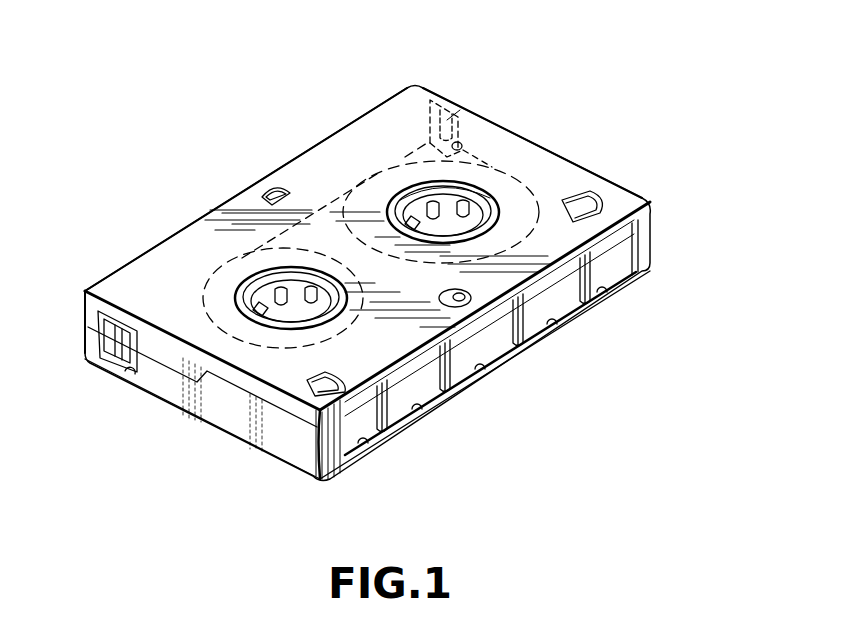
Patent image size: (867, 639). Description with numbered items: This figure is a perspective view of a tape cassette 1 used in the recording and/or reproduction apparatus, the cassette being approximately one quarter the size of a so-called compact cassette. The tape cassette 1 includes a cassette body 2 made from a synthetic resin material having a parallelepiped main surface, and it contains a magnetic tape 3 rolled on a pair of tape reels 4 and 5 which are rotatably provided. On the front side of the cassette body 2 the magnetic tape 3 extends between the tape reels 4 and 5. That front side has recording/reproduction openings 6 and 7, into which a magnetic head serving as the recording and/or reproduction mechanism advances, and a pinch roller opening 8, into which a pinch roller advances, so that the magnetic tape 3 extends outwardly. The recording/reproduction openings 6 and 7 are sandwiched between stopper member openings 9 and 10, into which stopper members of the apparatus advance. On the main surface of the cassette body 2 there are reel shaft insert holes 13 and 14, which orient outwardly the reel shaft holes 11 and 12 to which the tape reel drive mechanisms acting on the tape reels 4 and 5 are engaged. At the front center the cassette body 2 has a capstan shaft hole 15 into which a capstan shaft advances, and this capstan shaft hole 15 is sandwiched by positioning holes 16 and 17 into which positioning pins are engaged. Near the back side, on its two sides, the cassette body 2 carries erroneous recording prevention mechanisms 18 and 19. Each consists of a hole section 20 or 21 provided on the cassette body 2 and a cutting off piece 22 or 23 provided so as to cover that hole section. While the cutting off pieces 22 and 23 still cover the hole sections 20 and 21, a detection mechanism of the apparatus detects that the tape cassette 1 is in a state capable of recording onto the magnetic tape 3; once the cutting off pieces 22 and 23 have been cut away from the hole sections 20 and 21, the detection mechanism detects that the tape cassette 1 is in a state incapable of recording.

The tape cassette 1 is at (583, 82).
The cassette body 2 is at (426, 80).
The magnetic tape 3 is at (612, 262).
The tape reel 4 is at (242, 288).
The tape reel 5 is at (402, 196).
The recording/reproduction opening 6 is at (552, 327).
The recording/reproduction opening 7 is at (417, 412).
The pinch roller opening 8 is at (480, 372).
The stopper member opening 9 is at (363, 446).
The stopper member opening 10 is at (600, 292).
The reel shaft hole 11 is at (317, 272).
The reel shaft hole 12 is at (428, 200).
The reel shaft insert hole 13 is at (240, 308).
The reel shaft insert hole 14 is at (492, 198).
The capstan shaft hole 15 is at (468, 296).
The positioning hole 16 is at (602, 210).
The positioning hole 17 is at (338, 380).
The erroneous recording prevention mechanism 18 is at (462, 108).
The erroneous recording prevention mechanism 19 is at (108, 383).
The hole section 20 is at (462, 145).
The hole section 21 is at (130, 377).
The cutting off piece 22 is at (447, 120).
The cutting off piece 23 is at (112, 340).